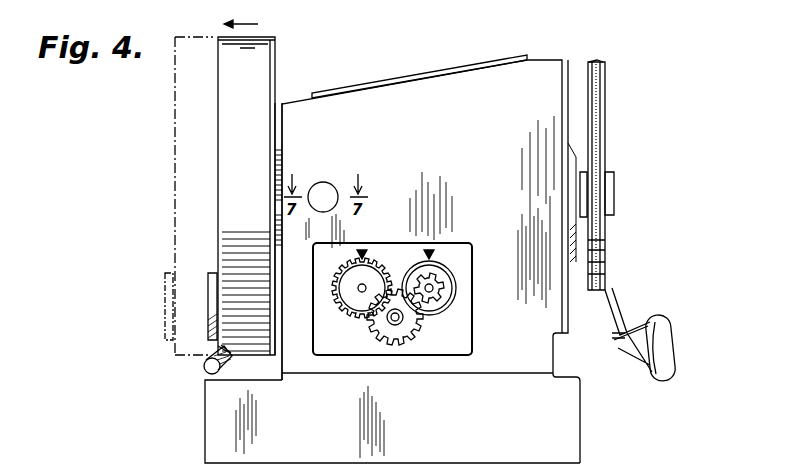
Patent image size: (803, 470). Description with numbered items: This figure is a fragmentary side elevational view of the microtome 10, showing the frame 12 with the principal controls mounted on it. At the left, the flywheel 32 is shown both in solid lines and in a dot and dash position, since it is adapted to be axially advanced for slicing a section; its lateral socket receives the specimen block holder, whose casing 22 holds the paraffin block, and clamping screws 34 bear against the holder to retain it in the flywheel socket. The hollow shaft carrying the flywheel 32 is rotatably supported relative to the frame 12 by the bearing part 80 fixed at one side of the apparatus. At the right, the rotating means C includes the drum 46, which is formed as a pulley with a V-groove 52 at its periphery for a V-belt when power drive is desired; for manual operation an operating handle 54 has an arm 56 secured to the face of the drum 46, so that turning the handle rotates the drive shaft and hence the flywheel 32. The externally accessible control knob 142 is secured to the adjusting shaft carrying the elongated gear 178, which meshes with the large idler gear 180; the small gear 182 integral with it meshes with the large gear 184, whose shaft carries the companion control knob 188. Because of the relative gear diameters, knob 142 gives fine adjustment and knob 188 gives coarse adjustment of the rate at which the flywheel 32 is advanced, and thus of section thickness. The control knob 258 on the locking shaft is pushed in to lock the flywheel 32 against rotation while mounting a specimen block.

The microtome 10 is at (631, 233).
The frame 12 is at (591, 403).
The casing 22 is at (208, 286).
The flywheel 32 is at (226, 181).
The clamping screws 34 is at (204, 369).
The drum 46 is at (604, 102).
The V-groove 52 is at (598, 61).
The operating handle 54 is at (664, 320).
The arm 56 is at (612, 312).
The bearing part 80 is at (275, 221).
The control knob 142 is at (436, 270).
The elongated gear 178 is at (442, 295).
The gear 180 is at (420, 325).
The gear 182 is at (400, 330).
The gear 184 is at (347, 300).
The control knob 188 is at (366, 270).
The control knob 258 is at (322, 184).
The rotating means C is at (620, 170).